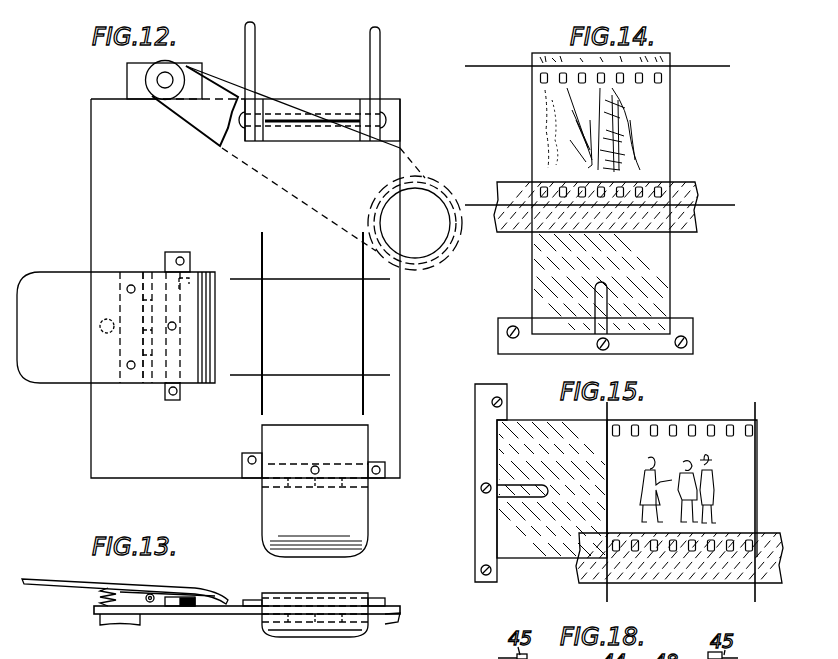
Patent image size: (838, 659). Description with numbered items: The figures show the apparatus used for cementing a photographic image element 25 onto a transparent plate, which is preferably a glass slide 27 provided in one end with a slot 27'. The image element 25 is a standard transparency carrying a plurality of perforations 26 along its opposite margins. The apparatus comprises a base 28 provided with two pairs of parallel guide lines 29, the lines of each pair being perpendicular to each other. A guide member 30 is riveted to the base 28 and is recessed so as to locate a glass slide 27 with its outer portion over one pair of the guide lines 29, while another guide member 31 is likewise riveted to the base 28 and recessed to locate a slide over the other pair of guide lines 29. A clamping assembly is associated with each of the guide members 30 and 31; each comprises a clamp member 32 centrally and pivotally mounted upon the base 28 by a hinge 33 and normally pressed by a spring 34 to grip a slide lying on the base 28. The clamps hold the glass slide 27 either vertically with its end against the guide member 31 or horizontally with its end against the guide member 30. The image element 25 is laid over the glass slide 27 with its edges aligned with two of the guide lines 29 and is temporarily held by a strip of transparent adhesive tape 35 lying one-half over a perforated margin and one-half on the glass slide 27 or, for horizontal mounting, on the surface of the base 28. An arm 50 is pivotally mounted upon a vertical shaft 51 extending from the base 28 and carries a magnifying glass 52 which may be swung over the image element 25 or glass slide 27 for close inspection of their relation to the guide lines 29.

In FIG. 14, the image element 25 is at (662, 116).
In FIG. 15, the image element 25 is at (733, 420).
In FIG. 14, the perforations 26 is at (661, 78).
In FIG. 15, the perforations 26 is at (650, 423).
In FIG. 14, the glass slide 27 is at (597, 280).
In FIG. 15, the glass slide 27 is at (575, 491).
In FIG. 14, the slot 27' is at (656, 306).
In FIG. 15, the slot 27' is at (499, 502).
In FIG. 12, the base 28 is at (91, 196).
In FIG. 13, the base 28 is at (94, 612).
In FIG. 12, the guide lines 29 is at (363, 258).
In FIG. 14, the guide lines 29 is at (491, 68).
In FIG. 15, the guide lines 29 is at (755, 596).
In FIG. 12, the guide member 30 is at (165, 262).
In FIG. 13, the guide member 30 is at (172, 607).
In FIG. 15, the guide member 30 is at (475, 459).
In FIG. 12, the guide member 31 is at (250, 479).
In FIG. 13, the guide member 31 is at (248, 600).
In FIG. 14, the guide member 31 is at (498, 346).
In FIG. 12, the clamp member 32 is at (83, 384).
In FIG. 13, the clamp member 32 is at (50, 580).
In FIG. 12, the hinge 33 is at (143, 384).
In FIG. 13, the hinge 33 is at (150, 594).
In FIG. 12, the spring 34 is at (106, 318).
In FIG. 13, the spring 34 is at (100, 598).
In FIG. 14, the transparent adhesive tape 35 is at (695, 182).
In FIG. 15, the transparent adhesive tape 35 is at (580, 550).
In FIG. 12, the arm 50 is at (206, 133).
In FIG. 12, the vertical shaft 51 is at (155, 79).
In FIG. 12, the magnifying glass 52 is at (417, 178).